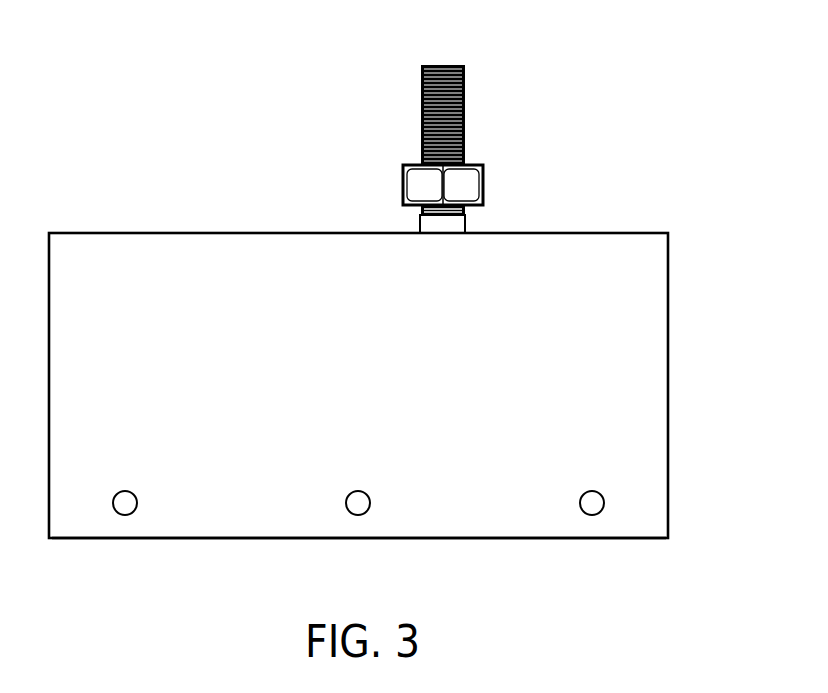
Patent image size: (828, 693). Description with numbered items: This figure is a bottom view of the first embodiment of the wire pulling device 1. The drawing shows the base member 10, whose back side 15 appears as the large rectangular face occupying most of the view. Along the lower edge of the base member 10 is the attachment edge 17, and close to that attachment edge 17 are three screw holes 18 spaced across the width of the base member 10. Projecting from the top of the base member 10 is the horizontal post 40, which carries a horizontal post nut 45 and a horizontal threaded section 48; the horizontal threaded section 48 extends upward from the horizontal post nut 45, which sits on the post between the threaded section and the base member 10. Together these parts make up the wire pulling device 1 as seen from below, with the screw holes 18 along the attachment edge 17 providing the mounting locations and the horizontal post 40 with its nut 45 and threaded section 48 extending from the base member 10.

The wire pulling device 1 is at (54, 132).
The base member 10 is at (658, 203).
The back side 15 is at (622, 317).
The attachment edge 17 is at (493, 539).
The screw holes 18 is at (126, 499).
The horizontal post 40 is at (444, 149).
The horizontal post nut 45 is at (467, 183).
The horizontal threaded section 48 is at (463, 105).